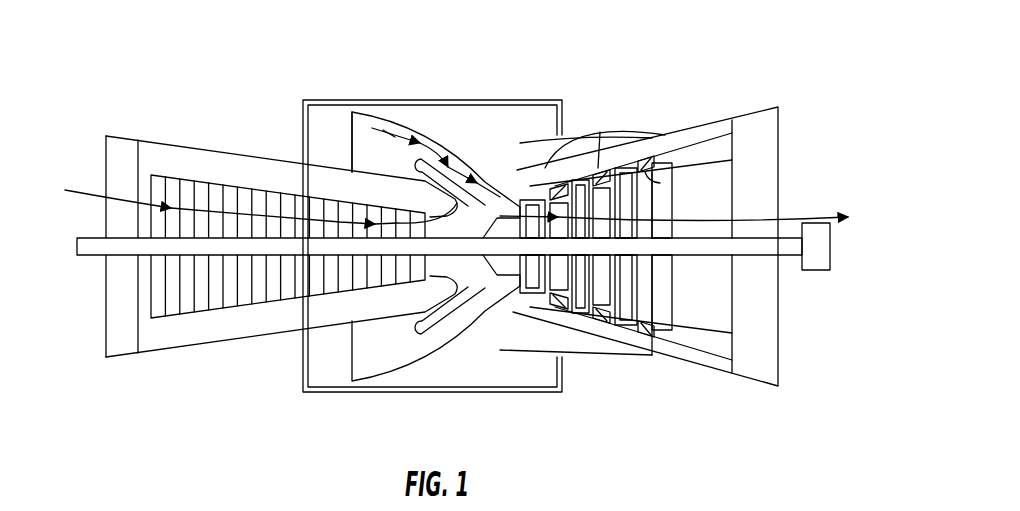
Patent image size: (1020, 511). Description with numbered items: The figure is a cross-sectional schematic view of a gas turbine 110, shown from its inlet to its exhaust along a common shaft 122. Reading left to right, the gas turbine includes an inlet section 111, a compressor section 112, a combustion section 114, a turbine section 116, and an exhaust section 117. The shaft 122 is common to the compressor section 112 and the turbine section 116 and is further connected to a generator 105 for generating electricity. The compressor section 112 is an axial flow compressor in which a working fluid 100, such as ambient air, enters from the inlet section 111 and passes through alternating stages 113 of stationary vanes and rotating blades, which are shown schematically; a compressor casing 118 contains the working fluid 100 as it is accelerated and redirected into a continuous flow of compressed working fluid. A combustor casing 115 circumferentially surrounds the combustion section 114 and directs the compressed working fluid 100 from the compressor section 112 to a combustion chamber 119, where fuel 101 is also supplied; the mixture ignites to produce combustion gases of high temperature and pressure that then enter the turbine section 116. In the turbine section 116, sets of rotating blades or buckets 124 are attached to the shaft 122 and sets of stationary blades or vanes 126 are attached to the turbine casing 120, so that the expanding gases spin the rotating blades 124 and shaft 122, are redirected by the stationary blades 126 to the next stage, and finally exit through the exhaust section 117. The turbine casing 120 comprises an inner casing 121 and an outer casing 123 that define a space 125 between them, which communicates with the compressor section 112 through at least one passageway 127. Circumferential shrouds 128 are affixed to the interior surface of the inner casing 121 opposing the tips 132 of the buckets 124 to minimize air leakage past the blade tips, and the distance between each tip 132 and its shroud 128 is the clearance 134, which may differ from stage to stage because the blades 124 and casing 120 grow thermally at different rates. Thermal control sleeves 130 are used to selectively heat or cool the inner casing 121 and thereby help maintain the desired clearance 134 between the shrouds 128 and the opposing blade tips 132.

The working fluid 100 is at (88, 190).
The fuel 101 is at (383, 130).
The generator 105 is at (830, 245).
The gas turbine 110 is at (534, 62).
The inlet section 111 is at (117, 126).
The compressor section 112 is at (275, 234).
The alternating stages of stationary vanes and rotating blades 113 is at (230, 288).
The combustion section 114 is at (405, 116).
The combustor casing 115 is at (425, 135).
The turbine section 116 is at (647, 228).
The exhaust section 117 is at (761, 100).
The compressor casing 118 is at (228, 150).
The combustion chamber 119 is at (478, 150).
The turbine casing 120 is at (662, 133).
The inner casing 121 is at (562, 160).
The shaft 122 is at (788, 257).
The outer casing 123 is at (578, 158).
The rotating blades 124 is at (580, 287).
The space 125 is at (505, 150).
The stationary blades 126 is at (647, 263).
The passageway 127 is at (328, 100).
The circumferential shroud 128 is at (732, 133).
The thermal control sleeve 130 is at (545, 165).
The tips 132 is at (648, 170).
The clearance 134 is at (732, 160).